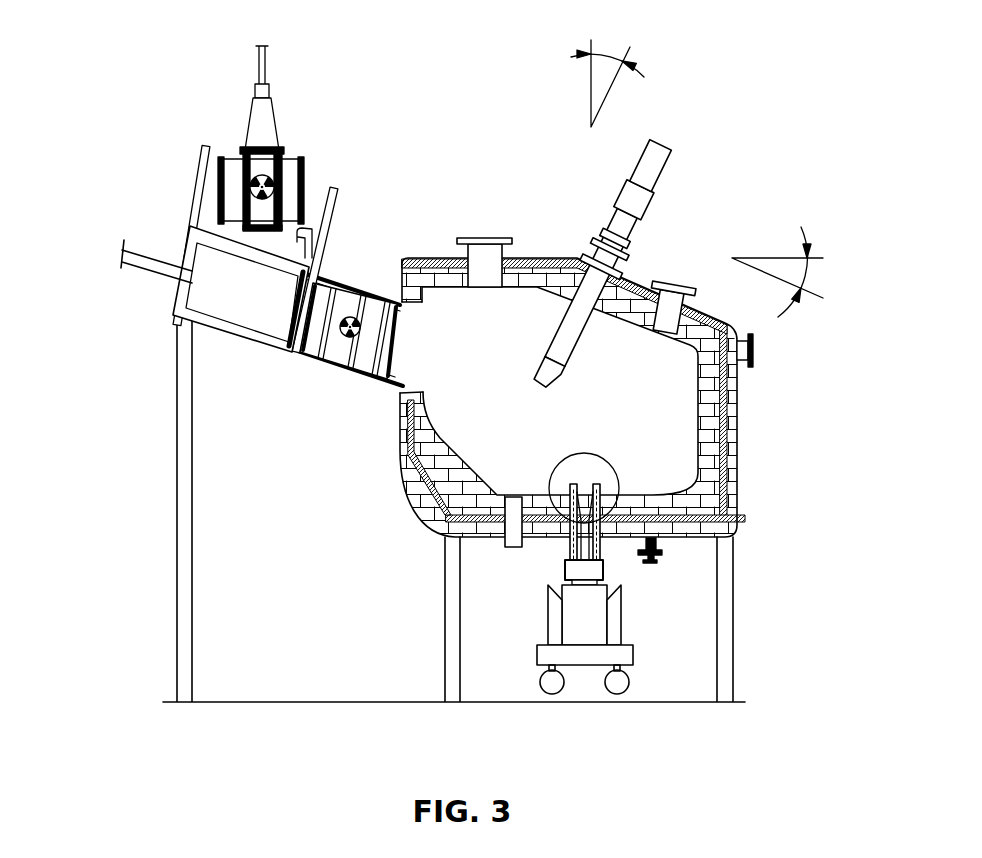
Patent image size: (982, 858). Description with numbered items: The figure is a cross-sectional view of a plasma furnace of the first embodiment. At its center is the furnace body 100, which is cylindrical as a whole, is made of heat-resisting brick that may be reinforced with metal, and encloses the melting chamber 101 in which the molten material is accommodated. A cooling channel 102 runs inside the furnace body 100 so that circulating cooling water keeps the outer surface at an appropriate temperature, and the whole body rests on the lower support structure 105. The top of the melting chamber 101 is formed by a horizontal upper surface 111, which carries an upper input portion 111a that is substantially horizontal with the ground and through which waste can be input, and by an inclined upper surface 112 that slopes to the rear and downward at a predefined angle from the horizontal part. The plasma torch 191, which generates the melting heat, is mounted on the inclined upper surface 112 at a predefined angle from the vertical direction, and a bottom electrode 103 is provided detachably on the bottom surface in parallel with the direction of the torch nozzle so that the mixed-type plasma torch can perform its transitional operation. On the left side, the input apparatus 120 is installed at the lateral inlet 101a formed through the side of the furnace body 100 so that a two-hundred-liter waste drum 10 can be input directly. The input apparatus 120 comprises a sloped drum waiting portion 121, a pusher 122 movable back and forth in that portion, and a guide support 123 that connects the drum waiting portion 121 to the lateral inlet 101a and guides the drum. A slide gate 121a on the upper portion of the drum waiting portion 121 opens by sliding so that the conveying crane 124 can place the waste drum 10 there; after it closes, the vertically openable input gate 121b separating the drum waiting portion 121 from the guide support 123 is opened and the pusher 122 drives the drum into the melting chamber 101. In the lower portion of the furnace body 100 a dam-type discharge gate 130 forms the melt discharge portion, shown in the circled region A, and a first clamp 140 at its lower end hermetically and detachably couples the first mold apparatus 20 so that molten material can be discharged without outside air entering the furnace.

The furnace body 100 is at (752, 413).
The melting chamber 101 is at (508, 396).
The lateral inlet 101a is at (414, 345).
The cooling channel 102 is at (740, 460).
The bottom electrode 103 is at (505, 532).
The lower support structure 105 is at (736, 647).
The horizontal upper surface 111 is at (436, 258).
The upper input portion 111a is at (488, 238).
The inclined upper surface 112 is at (645, 287).
The plasma torch 191 is at (665, 150).
The dam-type discharge gate 130 is at (589, 486).
The first clamp 140 is at (563, 572).
The first mold apparatus 20 is at (608, 621).
The input apparatus 120 is at (342, 153).
The drum waiting portion 121 is at (240, 340).
The slide gate 121a is at (205, 237).
The input gate 121b is at (296, 352).
The pusher 122 is at (135, 270).
The guide support 123 is at (340, 370).
The conveying crane 124 is at (254, 86).
The waste drum 10 is at (366, 283).
The detail region A is at (613, 471).